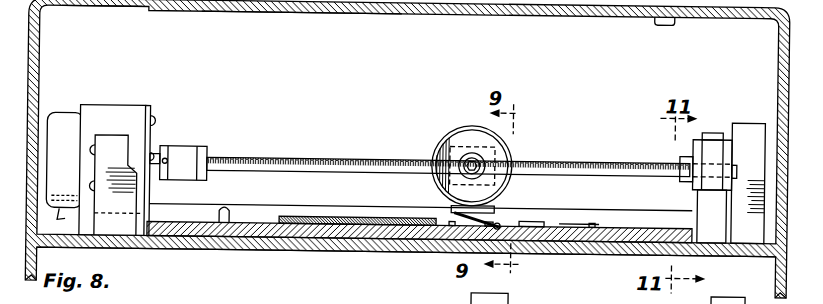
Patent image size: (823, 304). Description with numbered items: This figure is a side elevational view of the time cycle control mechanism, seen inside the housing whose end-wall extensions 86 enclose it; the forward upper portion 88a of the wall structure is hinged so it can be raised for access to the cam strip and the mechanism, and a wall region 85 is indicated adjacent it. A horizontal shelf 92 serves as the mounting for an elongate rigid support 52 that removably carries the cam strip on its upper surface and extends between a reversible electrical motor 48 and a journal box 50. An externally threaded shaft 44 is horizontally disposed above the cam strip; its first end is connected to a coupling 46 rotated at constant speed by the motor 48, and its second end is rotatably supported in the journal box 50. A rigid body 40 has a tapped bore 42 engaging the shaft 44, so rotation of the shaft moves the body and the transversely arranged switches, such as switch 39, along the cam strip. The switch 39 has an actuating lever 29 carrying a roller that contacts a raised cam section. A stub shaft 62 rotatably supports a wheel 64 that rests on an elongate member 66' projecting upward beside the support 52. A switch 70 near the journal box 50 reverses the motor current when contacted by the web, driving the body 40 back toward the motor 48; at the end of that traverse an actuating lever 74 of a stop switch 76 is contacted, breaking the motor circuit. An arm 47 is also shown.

The upwardly projecting extension 86 is at (38, 37).
The housing cover portion 85 is at (108, 11).
The forward upper portion of the wall structure 88a is at (283, 15).
The reversible electrical motor 48 is at (145, 110).
The stop switch 76 is at (137, 227).
The actuating lever 74 is at (165, 167).
The coupling 46 is at (190, 149).
The externally threaded shaft 44 is at (385, 160).
The switch 39 is at (462, 191).
The elongate rigid support 52 is at (209, 231).
The horizontal shelf 92 is at (305, 253).
The elongate member 66' is at (475, 206).
The arm 47 is at (591, 224).
The tapped bore 42 is at (434, 163).
The rigid body 40 is at (487, 160).
The wheel 64 is at (478, 157).
The stub shaft 62 is at (490, 164).
The actuating lever 29 is at (500, 223).
The journal box 50 is at (706, 141).
The switch 70 is at (760, 119).